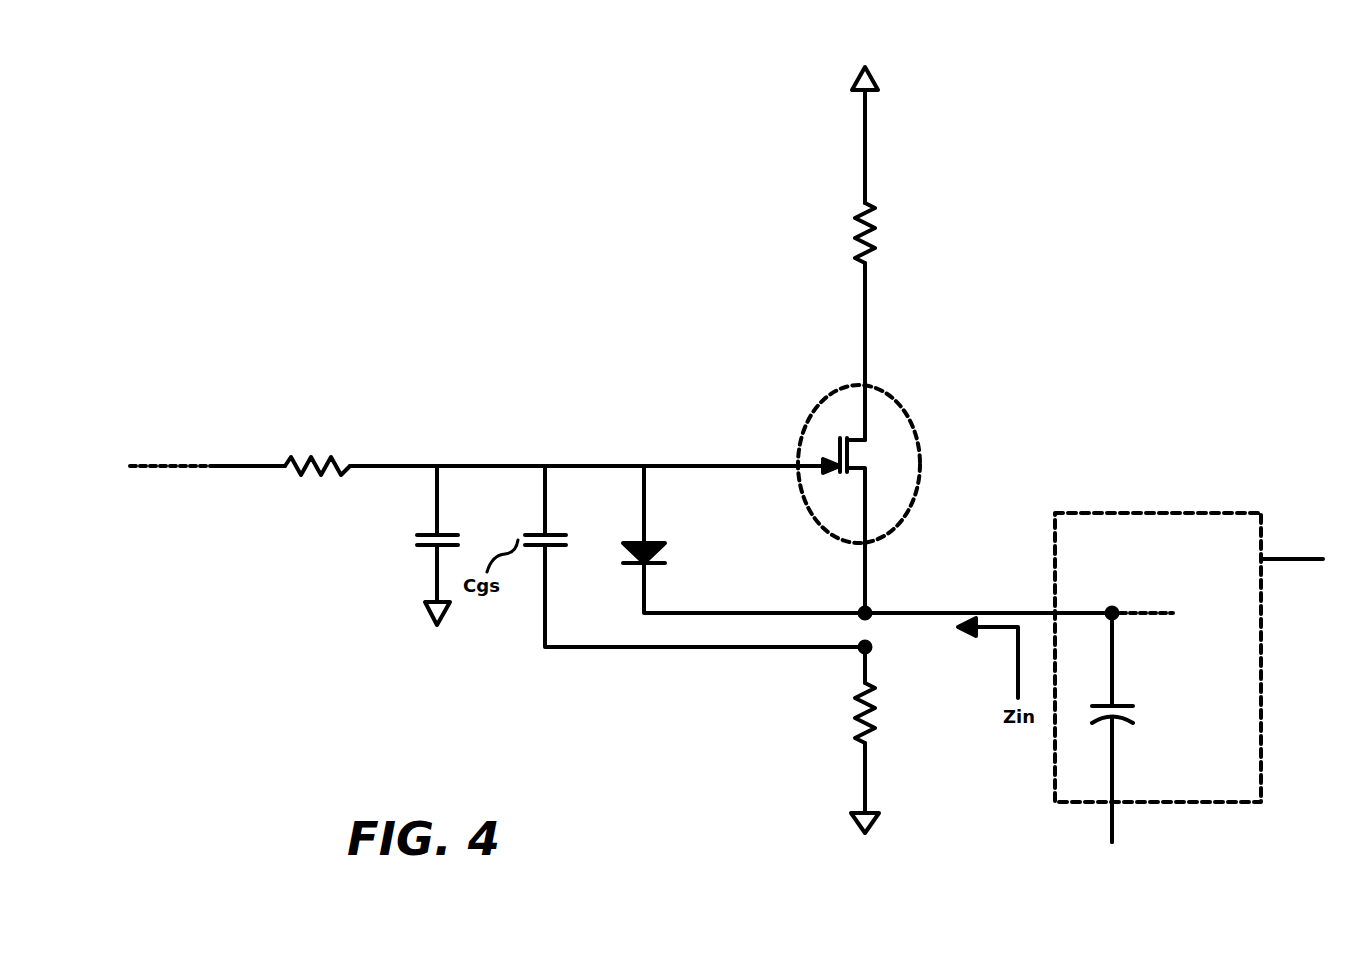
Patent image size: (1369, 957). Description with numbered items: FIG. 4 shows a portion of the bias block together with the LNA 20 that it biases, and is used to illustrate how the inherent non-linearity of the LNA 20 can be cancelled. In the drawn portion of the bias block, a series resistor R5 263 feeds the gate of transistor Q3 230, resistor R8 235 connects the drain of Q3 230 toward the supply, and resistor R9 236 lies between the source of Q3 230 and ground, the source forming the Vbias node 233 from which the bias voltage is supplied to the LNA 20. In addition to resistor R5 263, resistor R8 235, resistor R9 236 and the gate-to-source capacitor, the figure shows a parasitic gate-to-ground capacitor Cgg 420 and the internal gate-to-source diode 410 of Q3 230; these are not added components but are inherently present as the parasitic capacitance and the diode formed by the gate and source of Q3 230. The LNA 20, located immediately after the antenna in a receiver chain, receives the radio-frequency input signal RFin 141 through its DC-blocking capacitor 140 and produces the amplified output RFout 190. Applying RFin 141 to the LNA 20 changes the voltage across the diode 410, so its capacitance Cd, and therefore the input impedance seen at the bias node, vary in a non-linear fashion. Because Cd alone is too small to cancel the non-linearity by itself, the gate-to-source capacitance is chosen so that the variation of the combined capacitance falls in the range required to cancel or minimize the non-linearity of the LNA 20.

The resistor R5 263 is at (322, 453).
The parasitic gate-to-ground capacitor Cgg 420 is at (415, 538).
The internal gate-to-source diode 410 is at (625, 553).
The resistor R8 235 is at (885, 232).
The transistor Q3 230 is at (898, 405).
The bias voltage Vbias node 233 is at (955, 608).
The resistor R9 236 is at (850, 712).
The LNA 20 is at (1158, 657).
The DC-blocking capacitor 140 is at (1137, 705).
The signal RFin 141 is at (1113, 828).
The RFout 190 is at (1277, 557).